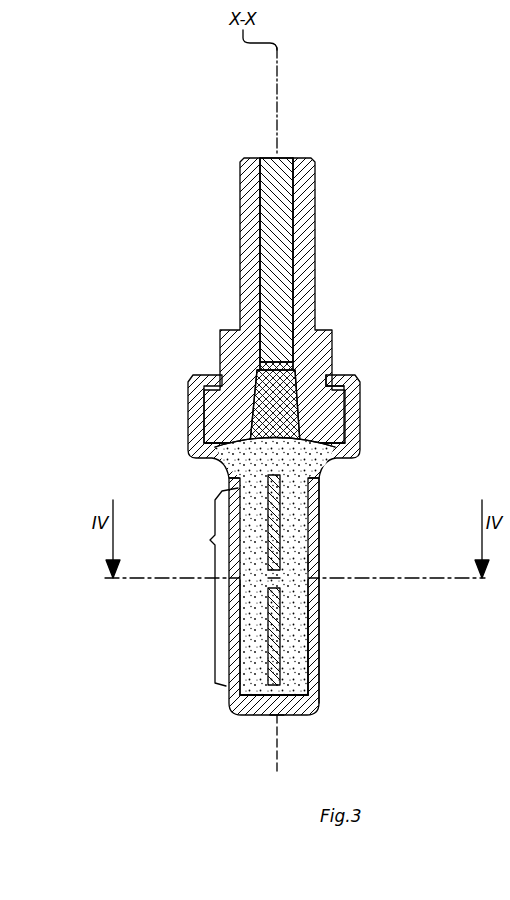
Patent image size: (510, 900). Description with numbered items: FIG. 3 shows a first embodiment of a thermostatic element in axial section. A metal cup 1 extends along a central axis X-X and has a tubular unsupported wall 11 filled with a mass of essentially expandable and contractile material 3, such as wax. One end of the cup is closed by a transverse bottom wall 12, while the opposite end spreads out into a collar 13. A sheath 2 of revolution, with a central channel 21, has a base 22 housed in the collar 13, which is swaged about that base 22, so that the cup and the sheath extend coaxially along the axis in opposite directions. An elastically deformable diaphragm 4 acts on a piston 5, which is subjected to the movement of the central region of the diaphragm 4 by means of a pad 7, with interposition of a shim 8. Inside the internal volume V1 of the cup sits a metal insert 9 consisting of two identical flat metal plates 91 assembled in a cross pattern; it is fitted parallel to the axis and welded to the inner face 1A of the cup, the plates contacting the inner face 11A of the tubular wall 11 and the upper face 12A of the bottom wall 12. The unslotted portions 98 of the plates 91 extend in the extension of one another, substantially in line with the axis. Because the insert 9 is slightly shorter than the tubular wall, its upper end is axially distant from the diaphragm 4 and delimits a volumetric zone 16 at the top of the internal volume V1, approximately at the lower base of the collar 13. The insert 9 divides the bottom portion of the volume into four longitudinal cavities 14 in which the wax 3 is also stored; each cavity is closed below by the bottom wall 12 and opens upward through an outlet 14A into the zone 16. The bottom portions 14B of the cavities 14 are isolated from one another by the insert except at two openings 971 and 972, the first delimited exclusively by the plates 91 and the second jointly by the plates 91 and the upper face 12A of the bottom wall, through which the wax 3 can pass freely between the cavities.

The metal cup 1 is at (255, 529).
The sheath 2 is at (318, 237).
The expandable and contractile material 3 is at (313, 647).
The elastically deformable diaphragm 4 is at (240, 372).
The piston 5 is at (256, 232).
The pad 7 is at (255, 408).
The shim 8 is at (260, 300).
The metal insert 9 is at (364, 580).
The tubular unsupported wall 11 is at (229, 627).
The closed transverse bottom wall 12 is at (248, 715).
The collar 13 is at (187, 422).
The longitudinal cavities 14 is at (166, 505).
The outlets of the cavities 14A is at (322, 480).
The bottom portions of the cavities 14B is at (235, 613).
The volumetric zone 16 is at (228, 450).
The central channel 21 is at (288, 158).
The base 22 is at (350, 385).
The flat metal plates 91 is at (282, 523).
The opening 971 is at (317, 562).
The opening 972 is at (292, 718).
The unslotted portions 98 is at (283, 626).
The inner face of the cup 1A is at (348, 665).
The inner face of the tubular portion 11A is at (305, 678).
The upper face of the bottom wall 12A is at (312, 688).
The internal volume V1 is at (330, 432).